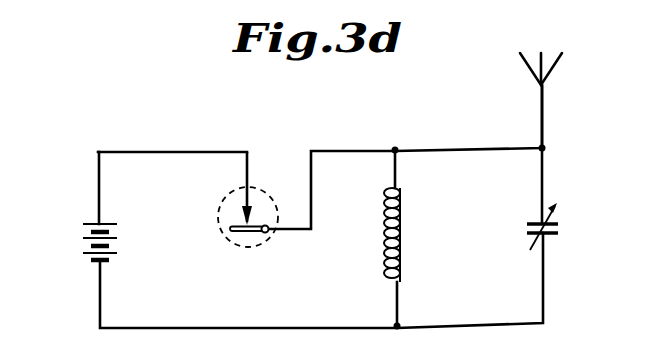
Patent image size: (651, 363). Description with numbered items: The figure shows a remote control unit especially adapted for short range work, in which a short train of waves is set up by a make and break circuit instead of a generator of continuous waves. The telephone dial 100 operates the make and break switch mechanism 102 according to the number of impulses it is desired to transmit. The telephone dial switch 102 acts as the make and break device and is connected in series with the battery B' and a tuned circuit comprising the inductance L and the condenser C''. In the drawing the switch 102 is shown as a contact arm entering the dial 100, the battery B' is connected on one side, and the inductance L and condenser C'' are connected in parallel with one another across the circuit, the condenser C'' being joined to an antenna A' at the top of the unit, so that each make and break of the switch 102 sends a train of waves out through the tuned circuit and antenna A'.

The battery B' is at (76, 242).
The make and break switch mechanism 102 is at (241, 221).
The telephone dial 100 is at (249, 248).
The inductance L is at (406, 226).
The antenna A' is at (553, 70).
The condenser C'' is at (564, 167).